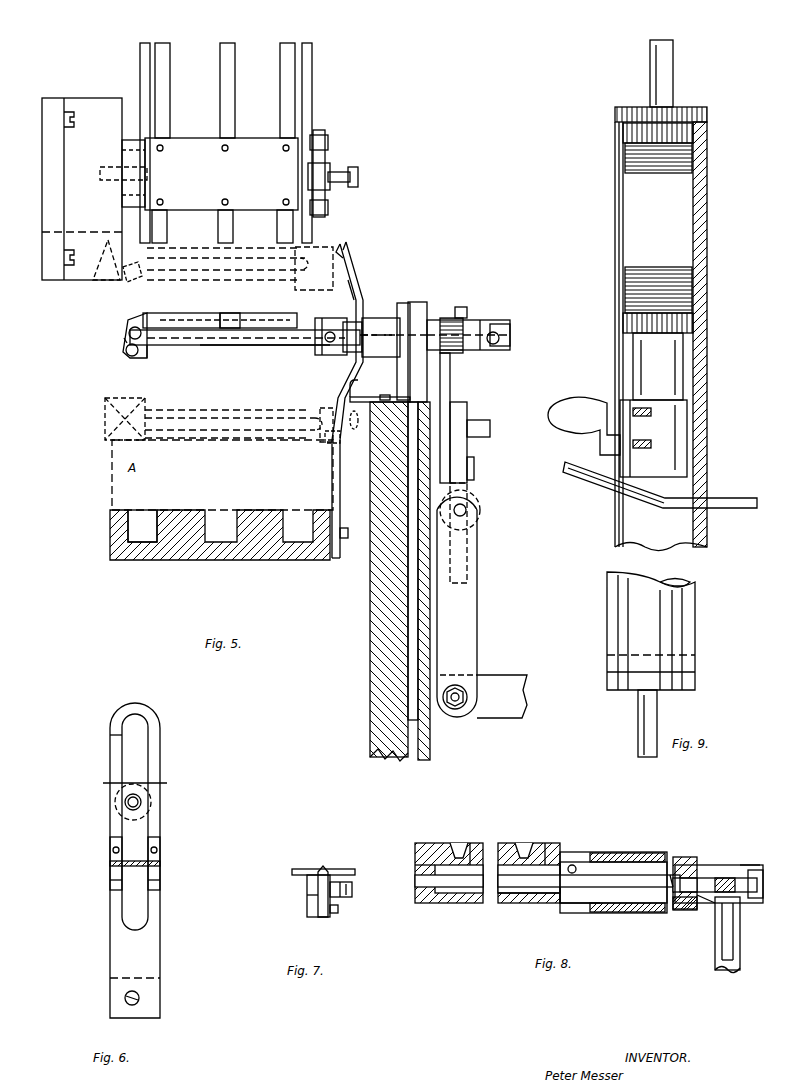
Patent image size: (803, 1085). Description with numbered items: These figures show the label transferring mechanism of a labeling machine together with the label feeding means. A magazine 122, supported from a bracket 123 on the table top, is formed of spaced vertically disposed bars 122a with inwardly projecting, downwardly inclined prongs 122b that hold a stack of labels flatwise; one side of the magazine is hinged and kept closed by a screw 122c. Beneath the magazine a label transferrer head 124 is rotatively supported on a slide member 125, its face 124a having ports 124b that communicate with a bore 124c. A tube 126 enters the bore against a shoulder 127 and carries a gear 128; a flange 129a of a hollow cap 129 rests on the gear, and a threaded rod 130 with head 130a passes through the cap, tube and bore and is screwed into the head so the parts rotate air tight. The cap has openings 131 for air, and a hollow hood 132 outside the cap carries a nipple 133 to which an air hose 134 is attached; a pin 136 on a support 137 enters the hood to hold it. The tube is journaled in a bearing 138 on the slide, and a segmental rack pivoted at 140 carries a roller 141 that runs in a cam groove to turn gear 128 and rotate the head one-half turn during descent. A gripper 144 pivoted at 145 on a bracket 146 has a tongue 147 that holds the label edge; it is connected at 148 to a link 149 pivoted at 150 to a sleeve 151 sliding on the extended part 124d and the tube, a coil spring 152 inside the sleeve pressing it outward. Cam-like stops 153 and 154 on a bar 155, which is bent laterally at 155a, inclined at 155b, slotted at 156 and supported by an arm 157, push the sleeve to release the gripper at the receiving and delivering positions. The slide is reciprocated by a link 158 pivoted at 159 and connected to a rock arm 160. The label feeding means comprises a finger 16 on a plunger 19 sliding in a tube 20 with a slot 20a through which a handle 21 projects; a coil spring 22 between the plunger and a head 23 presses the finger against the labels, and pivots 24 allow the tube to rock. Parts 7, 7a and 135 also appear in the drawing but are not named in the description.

In FIG. 5, the base block 7 is at (188, 575).
In FIG. 5, the slot in base block 7a is at (142, 526).
In FIG. 9, the finger or pusher 16 is at (718, 498).
In FIG. 9, the plunger 19 is at (653, 438).
In FIG. 9, the guiding tube or casing 20 is at (700, 372).
In FIG. 9, the longitudinal slot 20a is at (617, 248).
In FIG. 9, the handle or finger piece 21 is at (582, 426).
In FIG. 9, the coil spring 22 is at (693, 282).
In FIG. 9, the head 23 is at (707, 118).
In FIG. 9, the pivots 24 is at (673, 68).
In FIG. 5, the magazine 122 is at (226, 143).
In FIG. 5, the vertically disposed bars 122a is at (220, 80).
In FIG. 5, the prongs 122b is at (320, 170).
In FIG. 5, the screw 122c is at (358, 172).
In FIG. 5, the bracket 123 is at (94, 189).
In FIG. 5, the label transferrer head 124 is at (198, 343).
In FIG. 7, the label transferrer head 124 is at (304, 869).
In FIG. 8, the label transferrer head 124 is at (452, 903).
In FIG. 5, the face of transferrer head 124a is at (193, 300).
In FIG. 8, the face of transferrer head 124a is at (430, 848).
In FIG. 5, the ports 124b is at (228, 313).
In FIG. 8, the ports 124b is at (465, 843).
In FIG. 8, the bore 124c is at (520, 903).
In FIG. 8, the extended part of head 124d is at (575, 905).
In FIG. 5, the slide member 125 is at (408, 640).
In FIG. 8, the tube 126 is at (572, 865).
In FIG. 8, the shoulder 127 is at (552, 837).
In FIG. 5, the gear 128 is at (447, 318).
In FIG. 8, the gear 128 is at (686, 857).
In FIG. 8, the hollow cap 129 is at (714, 870).
In FIG. 8, the flange or extension 129a is at (684, 912).
In FIG. 8, the threaded rod 130 is at (673, 920).
In FIG. 8, the head of threaded rod 130a is at (748, 865).
In FIG. 8, the openings 131 is at (705, 900).
In FIG. 5, the hollow hood 132 is at (478, 326).
In FIG. 8, the hollow hood 132 is at (732, 870).
In FIG. 5, the nipple 133 is at (504, 348).
In FIG. 8, the nipple 133 is at (738, 933).
In FIG. 8, the air hose 134 is at (740, 965).
In FIG. 5, the bar 135 is at (450, 378).
In FIG. 5, the pin 136 is at (463, 307).
In FIG. 5, the support 137 is at (437, 303).
In FIG. 5, the bearing 138 is at (437, 372).
In FIG. 5, the pivot 140 is at (470, 418).
In FIG. 5, the projection or roller 141 is at (476, 466).
In FIG. 5, the gripper 144 is at (110, 280).
In FIG. 7, the gripper 144 is at (326, 866).
In FIG. 5, the pivot of gripper 145 is at (126, 350).
In FIG. 5, the bracket 146 is at (145, 352).
In FIG. 5, the tongue 147 is at (140, 313).
In FIG. 5, the pivotal connection 148 is at (129, 330).
In FIG. 5, the link 149 is at (268, 343).
In FIG. 5, the pivotal connection 150 is at (348, 352).
In FIG. 5, the sleeve 151 is at (325, 318).
In FIG. 8, the sleeve 151 is at (615, 852).
In FIG. 8, the coil spring 152 is at (650, 853).
In FIG. 5, the cam-like stop 153 is at (345, 246).
In FIG. 6, the cam-like stop 153 is at (112, 733).
In FIG. 5, the cam-like stop 154 is at (333, 443).
In FIG. 6, the cam-like stop 154 is at (155, 858).
In FIG. 5, the bar 155 is at (340, 495).
In FIG. 6, the bar 155 is at (146, 933).
In FIG. 5, the laterally bent part 155a is at (359, 365).
In FIG. 5, the inclined part 155b is at (355, 295).
In FIG. 6, the longitudinal slot 156 is at (140, 756).
In FIG. 5, the arm 157 is at (357, 412).
In FIG. 6, the arm 157 is at (110, 862).
In FIG. 5, the link 158 is at (478, 597).
In FIG. 5, the pivotal connection 159 is at (466, 508).
In FIG. 5, the rock arm 160 is at (483, 696).